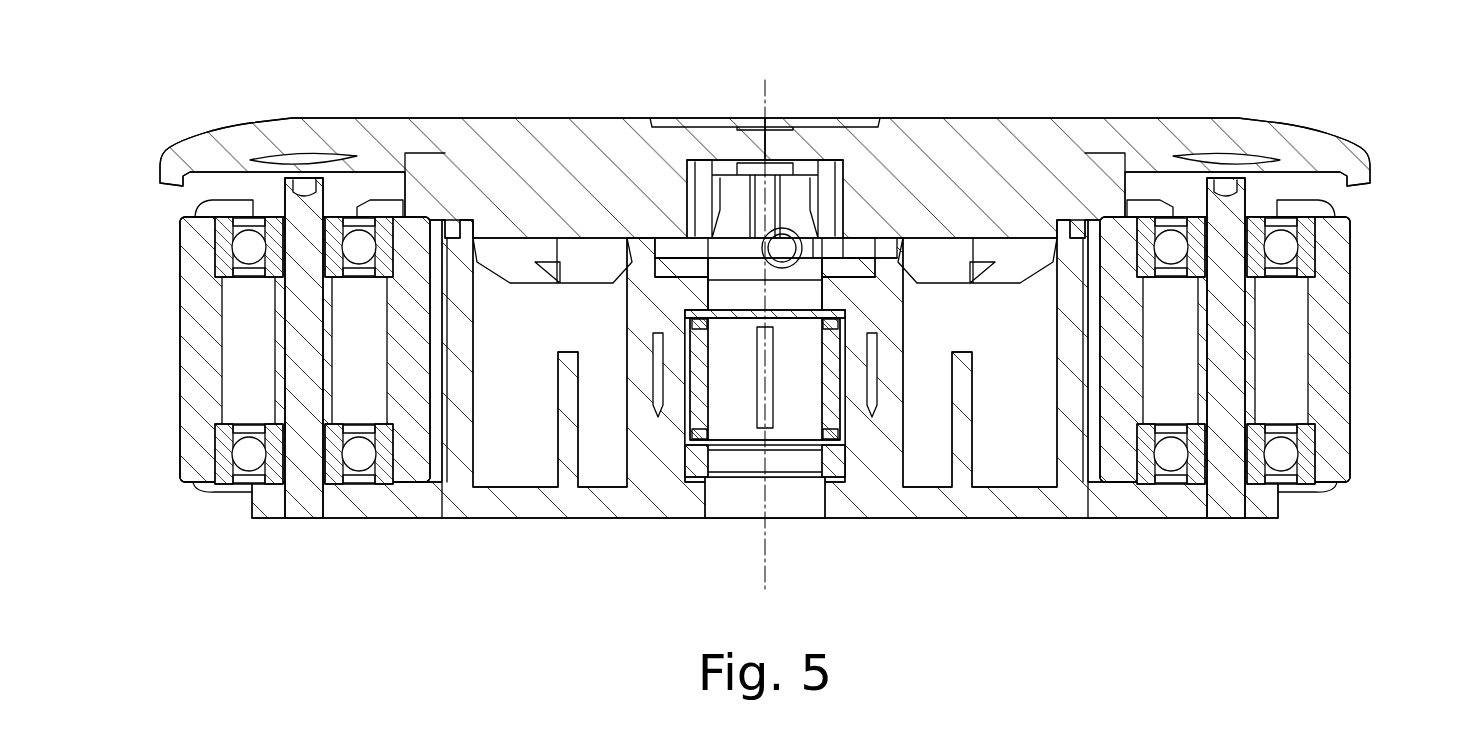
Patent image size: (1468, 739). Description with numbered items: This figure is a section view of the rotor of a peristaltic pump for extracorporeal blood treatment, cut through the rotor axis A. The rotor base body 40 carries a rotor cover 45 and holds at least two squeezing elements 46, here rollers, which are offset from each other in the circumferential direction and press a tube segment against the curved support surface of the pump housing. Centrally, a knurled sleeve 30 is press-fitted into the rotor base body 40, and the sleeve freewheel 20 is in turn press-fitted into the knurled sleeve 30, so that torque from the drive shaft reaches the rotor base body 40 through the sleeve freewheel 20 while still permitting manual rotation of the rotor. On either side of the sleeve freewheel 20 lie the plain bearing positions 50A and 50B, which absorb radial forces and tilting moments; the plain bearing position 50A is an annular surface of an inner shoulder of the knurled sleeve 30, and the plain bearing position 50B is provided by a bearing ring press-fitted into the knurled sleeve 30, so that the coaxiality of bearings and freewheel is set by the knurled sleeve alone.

The sleeve freewheel 20 is at (733, 380).
The knurled sleeve 30 is at (685, 272).
The rotor base body 40 is at (567, 488).
The rotor cover 45 is at (521, 158).
The squeezing elements 46 is at (197, 380).
The plain bearing position 50A is at (813, 277).
The plain bearing position 50B is at (712, 460).
The rotor axis A is at (768, 107).